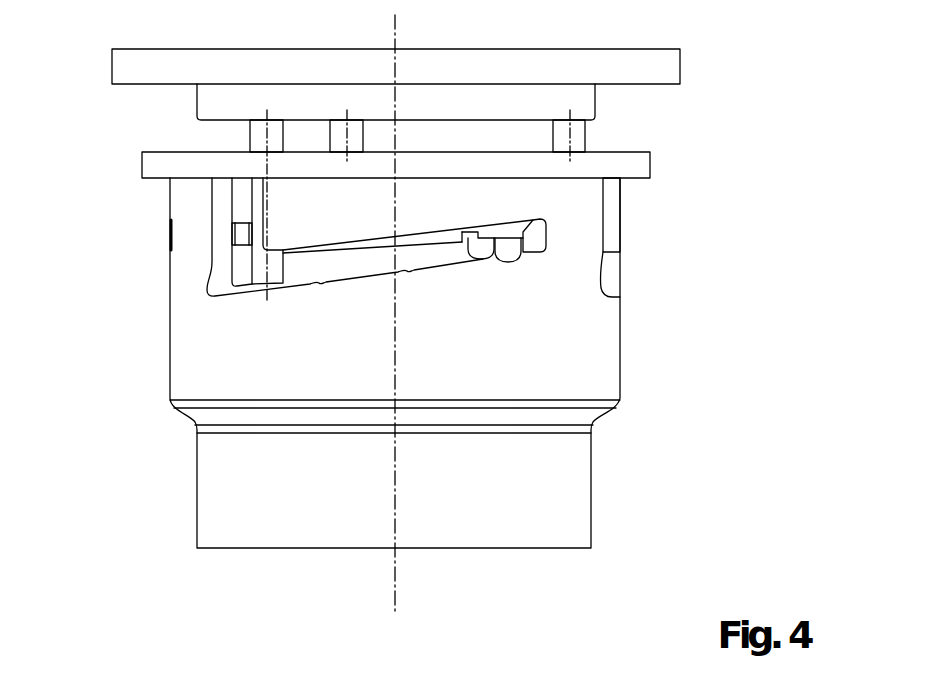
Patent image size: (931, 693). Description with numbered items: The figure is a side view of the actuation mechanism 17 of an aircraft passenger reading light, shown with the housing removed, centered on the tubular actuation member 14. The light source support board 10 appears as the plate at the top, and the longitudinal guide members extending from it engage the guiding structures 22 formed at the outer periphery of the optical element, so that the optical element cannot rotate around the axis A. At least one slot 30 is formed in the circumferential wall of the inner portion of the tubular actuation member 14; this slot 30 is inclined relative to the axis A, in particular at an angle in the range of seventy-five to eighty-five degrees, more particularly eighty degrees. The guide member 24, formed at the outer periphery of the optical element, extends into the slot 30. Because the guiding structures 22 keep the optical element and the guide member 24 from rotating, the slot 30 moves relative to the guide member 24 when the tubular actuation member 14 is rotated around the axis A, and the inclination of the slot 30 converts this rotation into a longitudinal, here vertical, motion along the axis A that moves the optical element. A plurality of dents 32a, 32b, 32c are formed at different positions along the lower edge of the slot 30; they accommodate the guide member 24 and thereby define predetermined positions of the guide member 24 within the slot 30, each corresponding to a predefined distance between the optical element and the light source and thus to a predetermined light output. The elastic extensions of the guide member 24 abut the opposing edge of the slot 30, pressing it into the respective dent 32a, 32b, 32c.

The light source support board 10 is at (627, 64).
The guiding structures 22 is at (275, 127).
The tubular actuation member 14 is at (179, 486).
The actuation mechanism 17 is at (101, 540).
The guide member 24 is at (546, 245).
The slot 30 is at (552, 262).
The dent 32a is at (319, 284).
The dent 32b is at (406, 272).
The dent 32c is at (510, 263).
The axis A is at (397, 30).